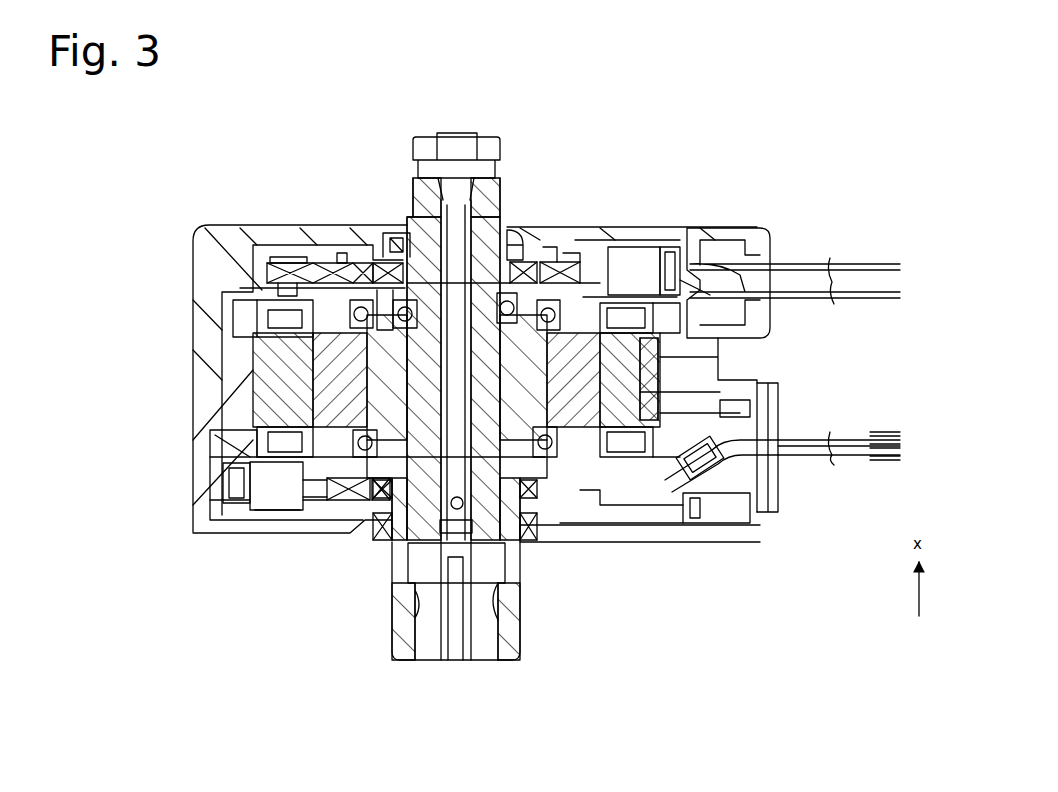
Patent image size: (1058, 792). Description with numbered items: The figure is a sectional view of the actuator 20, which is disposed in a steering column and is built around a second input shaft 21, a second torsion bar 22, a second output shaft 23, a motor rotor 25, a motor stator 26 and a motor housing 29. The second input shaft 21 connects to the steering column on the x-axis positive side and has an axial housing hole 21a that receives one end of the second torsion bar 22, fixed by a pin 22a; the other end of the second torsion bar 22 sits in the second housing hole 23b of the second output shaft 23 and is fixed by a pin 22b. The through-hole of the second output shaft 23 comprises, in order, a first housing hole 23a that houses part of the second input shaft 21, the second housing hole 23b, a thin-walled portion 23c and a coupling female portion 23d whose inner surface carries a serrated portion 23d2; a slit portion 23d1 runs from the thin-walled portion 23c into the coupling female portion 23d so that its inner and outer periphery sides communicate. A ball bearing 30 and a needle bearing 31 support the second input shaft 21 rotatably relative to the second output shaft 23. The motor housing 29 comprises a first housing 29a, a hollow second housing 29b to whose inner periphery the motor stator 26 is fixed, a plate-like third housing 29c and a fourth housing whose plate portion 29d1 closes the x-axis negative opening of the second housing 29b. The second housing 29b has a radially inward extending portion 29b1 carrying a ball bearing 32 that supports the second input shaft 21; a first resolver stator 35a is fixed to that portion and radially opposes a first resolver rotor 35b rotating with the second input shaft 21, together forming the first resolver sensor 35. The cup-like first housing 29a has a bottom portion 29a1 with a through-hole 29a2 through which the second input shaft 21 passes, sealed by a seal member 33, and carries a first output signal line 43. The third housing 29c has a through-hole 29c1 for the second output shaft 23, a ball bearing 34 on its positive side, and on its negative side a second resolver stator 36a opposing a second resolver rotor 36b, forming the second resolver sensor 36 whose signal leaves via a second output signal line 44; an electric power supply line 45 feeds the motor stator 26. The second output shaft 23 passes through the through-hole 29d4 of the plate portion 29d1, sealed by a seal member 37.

The actuator 20 is at (510, 148).
The second input shaft 21 is at (492, 222).
The housing hole 21a is at (468, 195).
The second torsion bar 22 is at (732, 372).
The pin 22a is at (457, 162).
The pin 22b is at (466, 615).
The second output shaft 23 is at (700, 514).
The first housing hole 23a is at (262, 315).
The second housing hole 23b is at (454, 600).
The thin-walled portion 23c is at (503, 630).
The coupling female portion 23d is at (415, 600).
The slit portion 23d1 is at (470, 562).
The serrated portion 23d2 is at (410, 648).
The motor rotor 25 is at (258, 360).
The motor stator 26 is at (300, 348).
The motor housing 29 is at (730, 392).
The first housing 29a is at (190, 249).
The bottom portion 29a1 is at (555, 240).
The through-hole 29a2 is at (396, 232).
The second housing 29b is at (735, 337).
The extending portion 29b1 is at (642, 292).
The third housing 29c is at (205, 436).
The through-hole 29c1 is at (385, 540).
The plate portion 29d1 is at (615, 542).
The through-hole 29d4 is at (660, 523).
The ball bearing 30 is at (548, 268).
The needle bearing 31 is at (760, 405).
The ball bearing 32 is at (634, 285).
The seal member 33 is at (512, 253).
The ball bearing 34 is at (752, 410).
The first resolver sensor 35 is at (348, 247).
The first resolver stator 35a is at (318, 262).
The first resolver rotor 35b is at (385, 262).
The second resolver sensor 36 is at (245, 470).
The second resolver stator 36a is at (752, 502).
The second resolver rotor 36b is at (715, 462).
The seal member 37 is at (320, 486).
The first output signal line 43 is at (840, 264).
The second output signal line 44 is at (845, 438).
The electric power supply line 45 is at (900, 446).